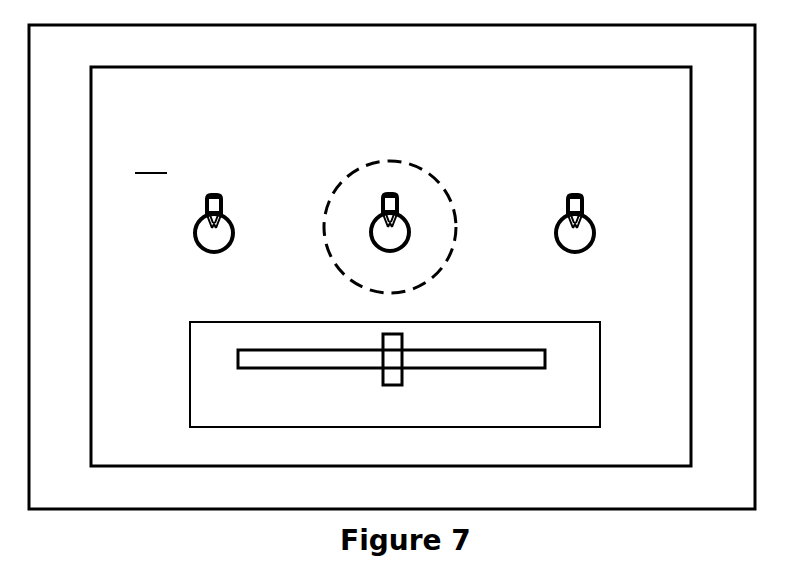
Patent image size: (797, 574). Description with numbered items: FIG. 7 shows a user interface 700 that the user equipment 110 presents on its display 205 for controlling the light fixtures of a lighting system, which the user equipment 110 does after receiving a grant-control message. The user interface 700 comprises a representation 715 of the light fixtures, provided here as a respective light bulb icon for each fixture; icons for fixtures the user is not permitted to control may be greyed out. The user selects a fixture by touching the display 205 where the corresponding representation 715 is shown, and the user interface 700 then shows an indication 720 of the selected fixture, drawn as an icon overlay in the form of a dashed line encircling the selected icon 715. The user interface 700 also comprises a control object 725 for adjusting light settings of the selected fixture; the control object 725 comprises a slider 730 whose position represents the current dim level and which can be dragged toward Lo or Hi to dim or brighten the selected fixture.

The user equipment 110 is at (676, 510).
The user interface 700 is at (170, 85).
The display 205 is at (153, 164).
The representation of the light fixtures 715 is at (234, 238).
The indication 720 is at (437, 270).
The control object 725 is at (600, 362).
The slider 730 is at (403, 375).